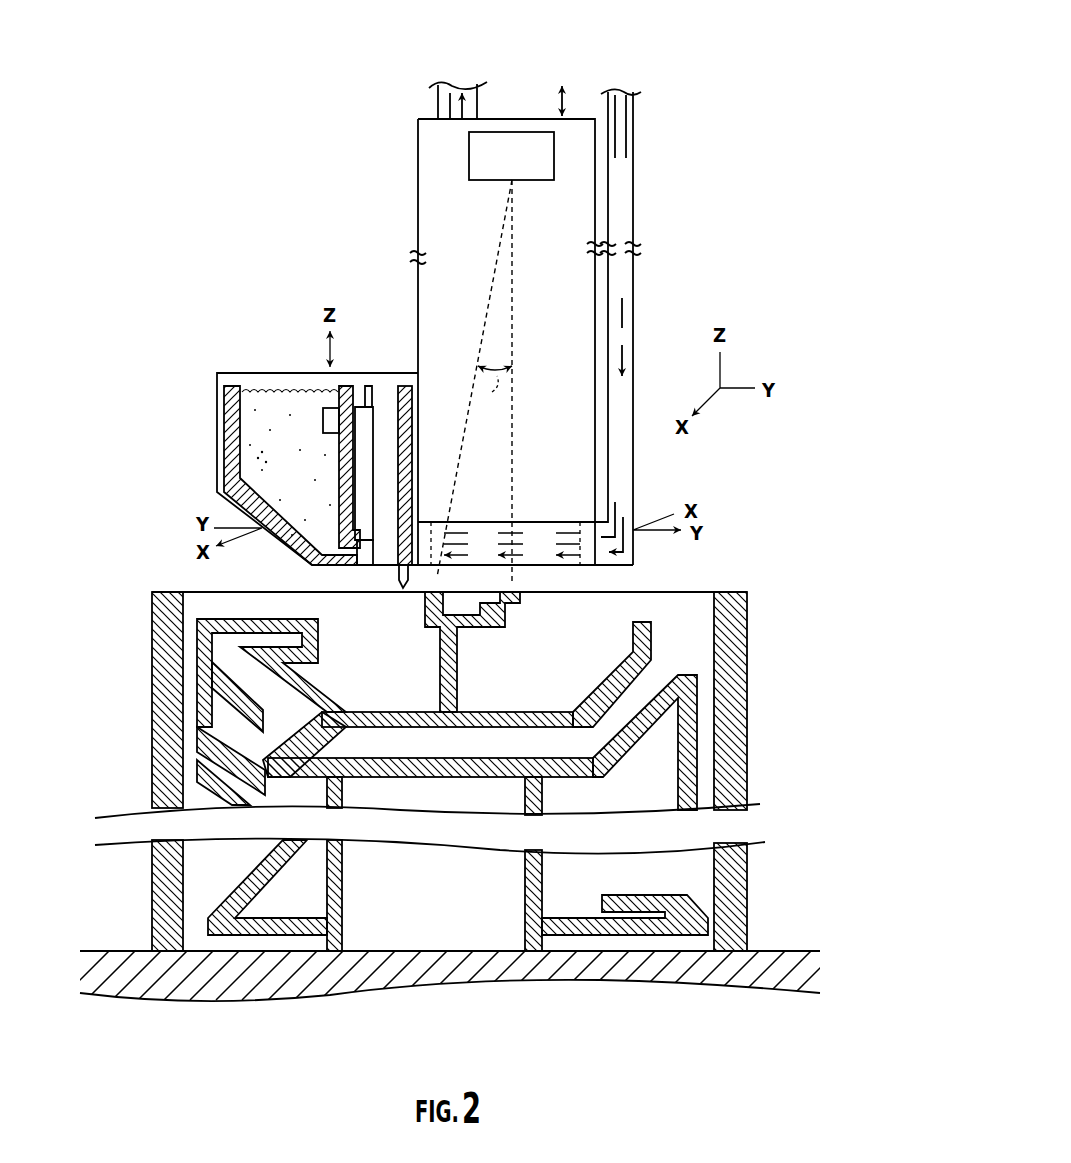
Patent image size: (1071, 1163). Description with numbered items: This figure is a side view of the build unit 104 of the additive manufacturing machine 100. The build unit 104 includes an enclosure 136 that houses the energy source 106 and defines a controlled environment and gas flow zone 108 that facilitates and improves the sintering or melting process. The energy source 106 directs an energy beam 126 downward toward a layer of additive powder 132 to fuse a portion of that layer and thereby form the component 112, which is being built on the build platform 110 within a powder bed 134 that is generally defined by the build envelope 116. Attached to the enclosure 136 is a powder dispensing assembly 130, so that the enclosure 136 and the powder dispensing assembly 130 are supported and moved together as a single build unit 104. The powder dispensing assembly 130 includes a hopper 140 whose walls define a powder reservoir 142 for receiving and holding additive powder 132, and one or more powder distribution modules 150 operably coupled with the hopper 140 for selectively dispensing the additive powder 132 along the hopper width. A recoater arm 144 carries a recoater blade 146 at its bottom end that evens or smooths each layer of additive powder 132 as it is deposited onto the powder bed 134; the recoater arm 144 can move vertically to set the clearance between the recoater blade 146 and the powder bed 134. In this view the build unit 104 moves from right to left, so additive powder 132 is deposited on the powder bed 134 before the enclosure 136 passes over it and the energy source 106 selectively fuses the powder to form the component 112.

The additive manufacturing machine 100 is at (113, 137).
The build unit 104 is at (677, 79).
The energy source 106 is at (512, 131).
The gas flow zone 108 is at (537, 528).
The build platform 110 is at (727, 977).
The component 112 is at (652, 637).
The build envelope 116 is at (748, 735).
The beam 126 is at (516, 281).
The powder dispensing assembly 130 is at (193, 365).
The additive powder 132 is at (255, 390).
The powder bed 134 is at (207, 590).
The enclosure 136 is at (417, 190).
The hopper 140 is at (223, 430).
The powder reservoir 142 is at (255, 463).
The recoater arm 144 is at (405, 388).
The recoater blade 146 is at (398, 573).
The powder distribution module 150 is at (381, 436).